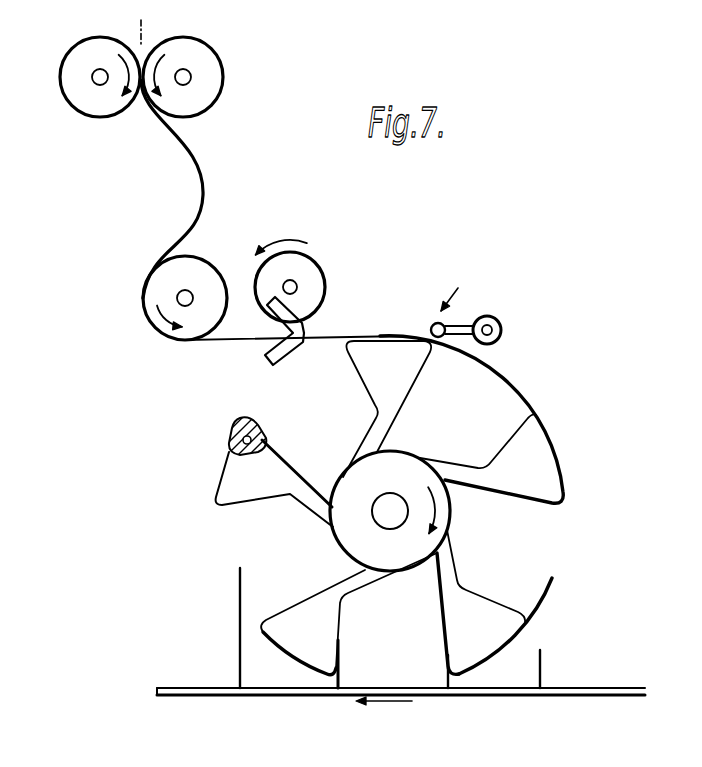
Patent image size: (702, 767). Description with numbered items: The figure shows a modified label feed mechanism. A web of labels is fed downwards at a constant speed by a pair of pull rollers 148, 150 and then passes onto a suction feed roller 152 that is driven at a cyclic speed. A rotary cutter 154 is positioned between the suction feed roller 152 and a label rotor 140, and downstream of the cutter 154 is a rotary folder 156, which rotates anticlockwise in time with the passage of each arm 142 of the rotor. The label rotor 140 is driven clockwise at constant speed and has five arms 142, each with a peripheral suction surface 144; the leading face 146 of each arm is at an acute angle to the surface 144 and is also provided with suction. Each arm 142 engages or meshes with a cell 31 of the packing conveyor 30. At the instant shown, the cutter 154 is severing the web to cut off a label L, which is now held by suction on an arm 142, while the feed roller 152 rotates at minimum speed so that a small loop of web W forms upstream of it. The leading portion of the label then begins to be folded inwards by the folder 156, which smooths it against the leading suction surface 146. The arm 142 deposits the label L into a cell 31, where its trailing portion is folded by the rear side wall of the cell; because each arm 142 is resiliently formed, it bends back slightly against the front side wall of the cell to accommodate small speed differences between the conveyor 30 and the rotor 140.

The pull roller 148 is at (76, 108).
The pull roller 150 is at (221, 78).
The suction feed roller 152 is at (210, 275).
The rotary cutter 154 is at (328, 275).
The rotary folder 156 is at (464, 322).
The label rotor 140 is at (350, 534).
The arm 142 is at (493, 610).
The peripheral suction surface 144 is at (229, 443).
The leading face 146 is at (263, 431).
The packing conveyor 30 is at (173, 688).
The cell 31 is at (240, 661).
The loop of web W is at (204, 196).
The label L is at (338, 334).